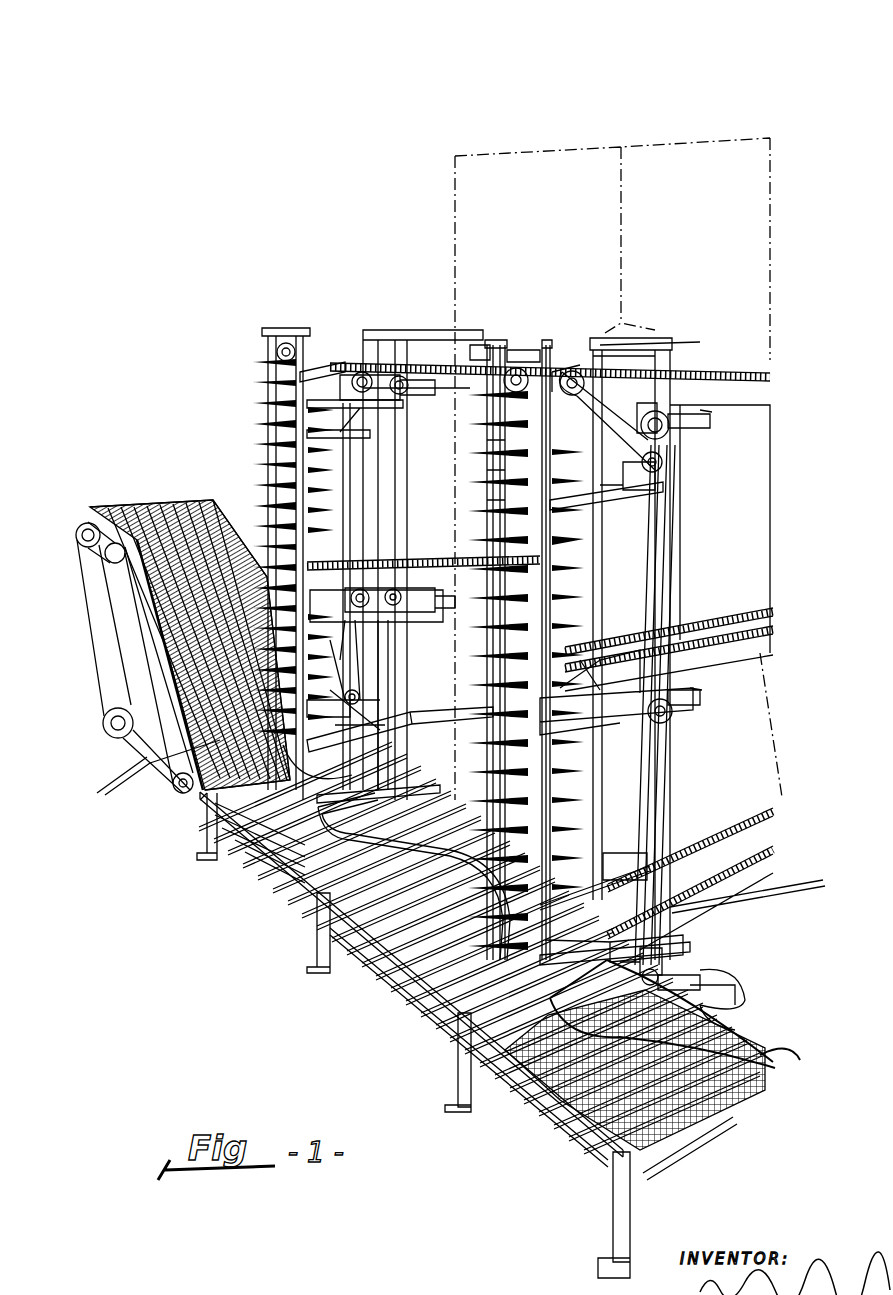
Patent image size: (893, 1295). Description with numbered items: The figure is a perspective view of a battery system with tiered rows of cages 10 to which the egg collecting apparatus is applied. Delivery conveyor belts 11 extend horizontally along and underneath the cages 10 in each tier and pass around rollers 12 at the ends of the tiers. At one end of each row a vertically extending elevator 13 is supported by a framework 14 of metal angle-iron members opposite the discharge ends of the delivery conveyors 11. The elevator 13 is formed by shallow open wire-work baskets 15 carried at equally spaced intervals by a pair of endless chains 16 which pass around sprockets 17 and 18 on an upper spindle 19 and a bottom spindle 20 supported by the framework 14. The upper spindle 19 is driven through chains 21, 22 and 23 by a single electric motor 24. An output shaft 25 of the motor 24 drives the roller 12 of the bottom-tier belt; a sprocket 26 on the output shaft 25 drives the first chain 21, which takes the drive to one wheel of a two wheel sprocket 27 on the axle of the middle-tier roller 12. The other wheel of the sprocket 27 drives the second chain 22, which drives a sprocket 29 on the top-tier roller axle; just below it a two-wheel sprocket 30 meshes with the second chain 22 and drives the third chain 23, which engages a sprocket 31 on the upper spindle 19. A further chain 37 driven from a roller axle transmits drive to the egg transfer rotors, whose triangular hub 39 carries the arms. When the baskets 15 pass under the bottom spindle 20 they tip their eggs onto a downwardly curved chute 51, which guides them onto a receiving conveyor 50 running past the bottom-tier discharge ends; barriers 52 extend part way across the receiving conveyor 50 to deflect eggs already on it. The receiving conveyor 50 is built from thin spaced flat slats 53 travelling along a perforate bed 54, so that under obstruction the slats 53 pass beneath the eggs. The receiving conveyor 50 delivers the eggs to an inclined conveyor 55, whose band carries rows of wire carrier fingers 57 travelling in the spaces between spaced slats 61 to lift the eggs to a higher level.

The cages 10 is at (617, 130).
The delivery conveyor belts 11 is at (700, 377).
The rollers 12 is at (635, 683).
The elevator 13 is at (257, 478).
The framework 14 is at (302, 337).
The baskets 15 is at (257, 415).
The endless chains 16 is at (540, 500).
The sprocket 17 is at (493, 342).
The sprocket 18 is at (423, 950).
The upper spindle 19 is at (523, 350).
The bottom spindle 20 is at (437, 980).
The first chain 21 is at (667, 813).
The second chain 22 is at (677, 578).
The third chain 23 is at (664, 440).
The electric motor 24 is at (758, 1047).
The output shaft 25 is at (652, 975).
The sprocket 26 is at (663, 960).
The two wheel sprocket 27 is at (673, 713).
The sprocket 29 is at (668, 350).
The two-wheel sprocket 30 is at (663, 472).
The sprocket 31 is at (573, 372).
The chain 37 is at (360, 370).
The hub 39 is at (380, 592).
The receiving conveyor 50 is at (447, 1037).
The chute 51 is at (340, 832).
The barriers 52 is at (317, 807).
The slats 53 is at (345, 970).
The perforate bed 54 is at (575, 1143).
The inclined conveyor 55 is at (93, 668).
The carrier fingers 57 is at (172, 647).
The slats 61 is at (130, 765).